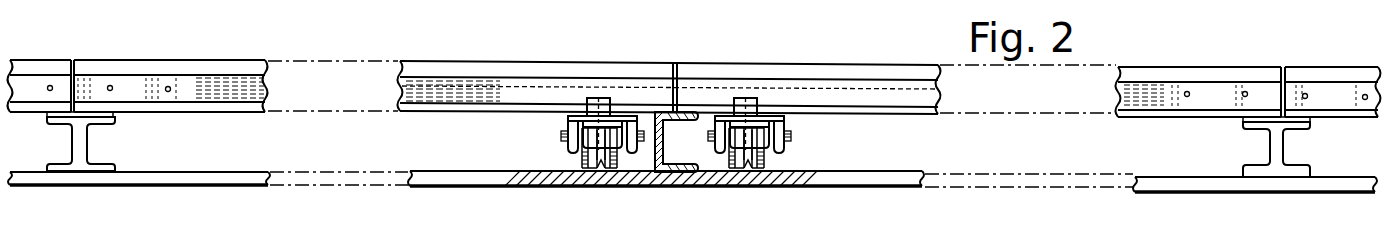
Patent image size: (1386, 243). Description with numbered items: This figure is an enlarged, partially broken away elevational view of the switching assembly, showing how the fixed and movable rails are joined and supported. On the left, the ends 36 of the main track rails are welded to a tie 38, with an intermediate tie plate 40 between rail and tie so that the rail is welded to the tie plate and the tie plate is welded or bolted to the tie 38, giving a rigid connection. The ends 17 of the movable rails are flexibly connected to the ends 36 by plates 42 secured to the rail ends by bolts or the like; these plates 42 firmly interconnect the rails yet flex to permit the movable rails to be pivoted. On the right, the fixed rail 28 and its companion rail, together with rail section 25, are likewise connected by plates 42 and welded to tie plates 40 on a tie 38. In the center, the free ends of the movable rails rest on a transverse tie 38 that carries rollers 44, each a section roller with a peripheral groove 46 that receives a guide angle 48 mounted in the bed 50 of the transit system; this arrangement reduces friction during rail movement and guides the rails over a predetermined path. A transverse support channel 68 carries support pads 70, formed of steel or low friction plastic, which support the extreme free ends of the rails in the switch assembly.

The ends of rails 18 36 is at (62, 68).
The ends of rails 16 17 is at (85, 67).
The plates 42 is at (133, 90).
The tie plate 40 is at (110, 114).
The tie 38 is at (82, 136).
The bed 50 is at (478, 179).
The support pad 70 is at (663, 113).
The support channel 68 is at (663, 139).
The roller 44 is at (580, 148).
The peripheral groove 46 is at (609, 152).
The guide angle 48 is at (600, 166).
The rail section 25 is at (1262, 72).
The rail 28 is at (1323, 77).